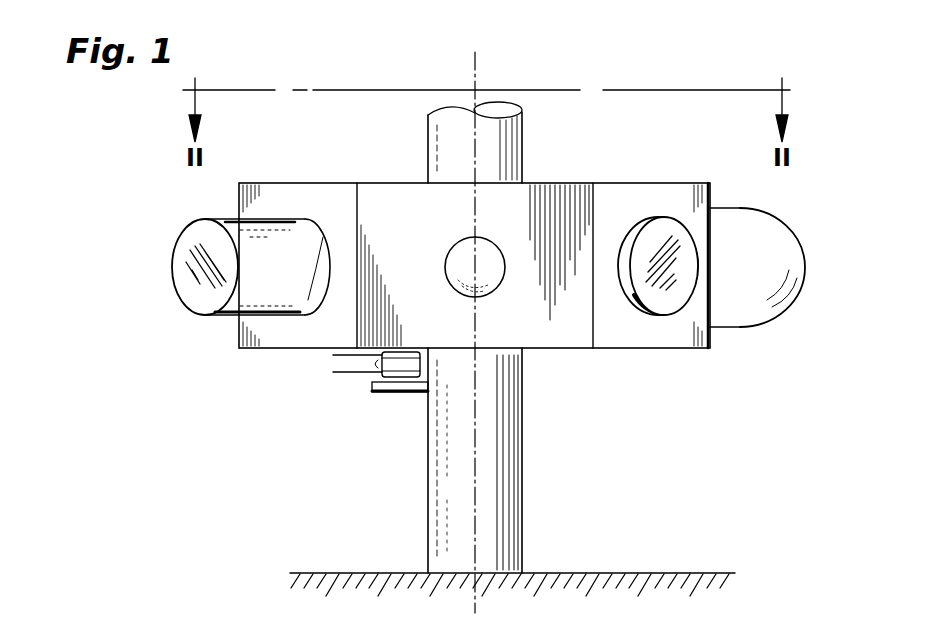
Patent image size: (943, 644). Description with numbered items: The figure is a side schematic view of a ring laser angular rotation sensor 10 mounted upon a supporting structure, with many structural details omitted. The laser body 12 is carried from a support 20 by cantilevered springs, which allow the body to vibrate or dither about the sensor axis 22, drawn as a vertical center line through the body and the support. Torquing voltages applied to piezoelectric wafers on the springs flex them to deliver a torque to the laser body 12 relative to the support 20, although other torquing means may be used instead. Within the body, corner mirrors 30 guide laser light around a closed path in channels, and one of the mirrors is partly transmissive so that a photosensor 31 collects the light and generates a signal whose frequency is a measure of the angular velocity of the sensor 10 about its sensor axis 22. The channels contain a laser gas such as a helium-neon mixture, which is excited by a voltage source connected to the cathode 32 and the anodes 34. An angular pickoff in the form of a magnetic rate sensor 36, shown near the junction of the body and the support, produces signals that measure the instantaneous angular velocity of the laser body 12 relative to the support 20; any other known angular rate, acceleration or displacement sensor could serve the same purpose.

The ring laser angular rotation sensor 10 is at (223, 370).
The laser body 12 is at (567, 340).
The support 20 is at (433, 492).
The sensor axis 22 is at (478, 75).
The corner mirrors 30 is at (655, 233).
The photosensor 31 is at (178, 243).
The cathode 32 is at (753, 315).
The anodes 34 is at (460, 250).
The magnetic rate sensor 36 is at (362, 380).